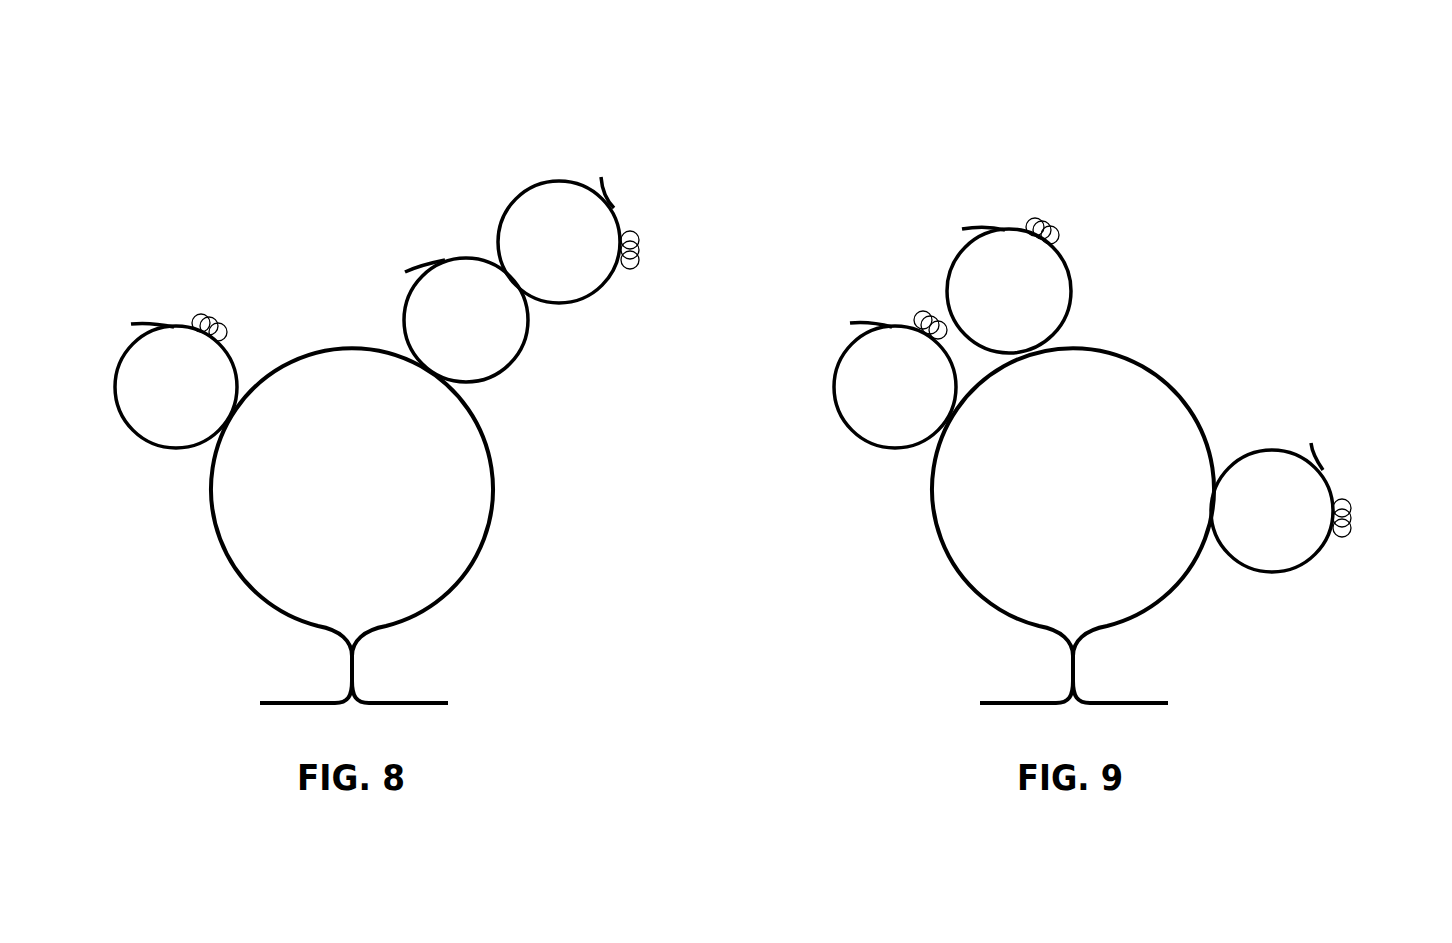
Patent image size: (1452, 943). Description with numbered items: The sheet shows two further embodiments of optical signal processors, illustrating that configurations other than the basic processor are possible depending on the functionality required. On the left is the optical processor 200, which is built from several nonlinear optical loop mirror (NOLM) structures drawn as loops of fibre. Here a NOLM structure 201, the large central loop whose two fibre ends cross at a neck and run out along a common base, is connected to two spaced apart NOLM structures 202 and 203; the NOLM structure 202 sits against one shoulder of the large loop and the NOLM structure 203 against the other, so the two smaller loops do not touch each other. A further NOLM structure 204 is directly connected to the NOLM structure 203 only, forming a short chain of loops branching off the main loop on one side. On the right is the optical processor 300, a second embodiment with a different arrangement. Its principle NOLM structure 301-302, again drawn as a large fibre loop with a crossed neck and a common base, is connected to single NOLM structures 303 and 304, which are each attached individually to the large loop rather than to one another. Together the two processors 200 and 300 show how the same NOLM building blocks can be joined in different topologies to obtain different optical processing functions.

In FIG. 8, the optical processor 200 is at (469, 373).
In FIG. 8, the NOLM structure 201 is at (498, 527).
In FIG. 8, the NOLM structure 202 is at (179, 284).
In FIG. 8, the NOLM structure 203 is at (424, 258).
In FIG. 8, the NOLM structure 204 is at (622, 172).
In FIG. 9, the optical processor 300 is at (1135, 419).
In FIG. 9, the NOLM structure 301 is at (1292, 438).
In FIG. 9, the NOLM structure 302 is at (1164, 358).
In FIG. 9, the NOLM structure 303 is at (1076, 257).
In FIG. 9, the NOLM structure 304 is at (877, 312).